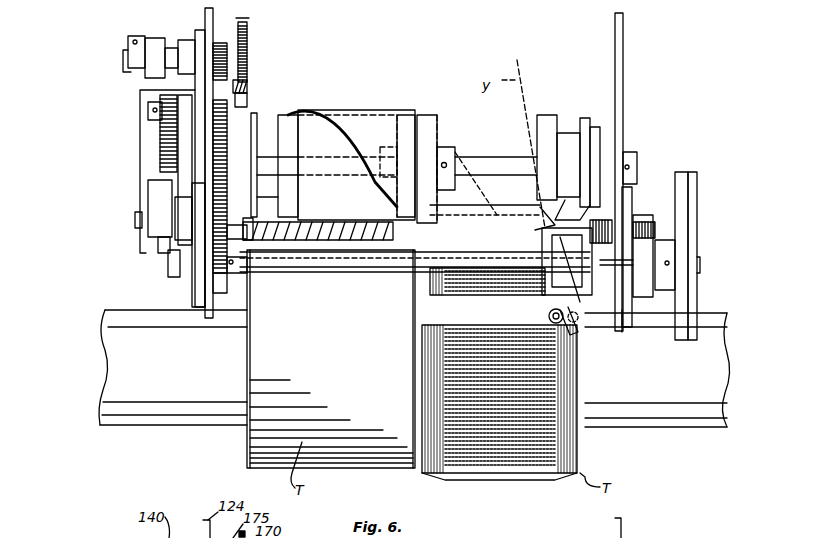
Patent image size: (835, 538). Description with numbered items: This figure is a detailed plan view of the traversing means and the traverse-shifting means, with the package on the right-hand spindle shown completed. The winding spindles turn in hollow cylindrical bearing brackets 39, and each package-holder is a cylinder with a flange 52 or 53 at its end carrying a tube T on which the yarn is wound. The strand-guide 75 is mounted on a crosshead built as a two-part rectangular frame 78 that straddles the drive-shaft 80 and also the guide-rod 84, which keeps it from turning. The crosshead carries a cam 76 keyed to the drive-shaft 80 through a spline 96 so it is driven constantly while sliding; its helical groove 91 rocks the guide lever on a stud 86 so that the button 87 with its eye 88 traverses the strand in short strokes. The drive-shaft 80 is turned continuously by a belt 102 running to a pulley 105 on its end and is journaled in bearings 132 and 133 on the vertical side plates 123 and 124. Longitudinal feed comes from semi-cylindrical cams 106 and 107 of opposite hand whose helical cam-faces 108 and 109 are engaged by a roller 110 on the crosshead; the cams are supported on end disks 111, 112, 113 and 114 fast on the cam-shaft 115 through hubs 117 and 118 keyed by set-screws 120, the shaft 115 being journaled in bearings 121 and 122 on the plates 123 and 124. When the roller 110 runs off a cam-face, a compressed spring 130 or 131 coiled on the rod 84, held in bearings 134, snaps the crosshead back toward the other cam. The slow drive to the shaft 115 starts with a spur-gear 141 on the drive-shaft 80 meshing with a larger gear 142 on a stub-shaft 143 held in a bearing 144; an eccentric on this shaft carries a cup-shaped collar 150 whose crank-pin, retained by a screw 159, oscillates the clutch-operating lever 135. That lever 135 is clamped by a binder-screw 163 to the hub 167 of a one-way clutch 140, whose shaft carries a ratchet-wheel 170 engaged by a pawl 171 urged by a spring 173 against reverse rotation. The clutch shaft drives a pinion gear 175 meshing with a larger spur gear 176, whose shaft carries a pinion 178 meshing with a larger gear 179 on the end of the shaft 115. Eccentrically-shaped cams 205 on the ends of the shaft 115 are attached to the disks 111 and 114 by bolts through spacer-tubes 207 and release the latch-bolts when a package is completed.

The bearing bracket 39 is at (120, 360).
The flange 52 is at (585, 443).
The flange 53 is at (250, 453).
The strand-guide 75 is at (545, 325).
The cam 76 is at (640, 215).
The two-part rectangular frame 78 is at (540, 207).
The drive-shaft 80 is at (405, 272).
The guide-rod 84 is at (340, 224).
The stud 86 is at (585, 290).
The button 87 is at (556, 313).
The eye 88 is at (556, 320).
The helical groove 91 is at (560, 243).
The spline 96 is at (355, 268).
The belt 102 is at (690, 180).
The pulley 105 is at (693, 240).
The semi-cylindrical cam 106 is at (478, 210).
The semi-cylindrical cam 107 is at (368, 172).
The helical cam-face 108 is at (483, 205).
The helical cam-face 109 is at (380, 112).
The roller 110 is at (571, 200).
The end disk 111 is at (565, 120).
The end disk 112 is at (440, 120).
The end disk 113 is at (400, 212).
The end disk 114 is at (293, 216).
The drive-shaft 115 is at (500, 168).
The hub 117 is at (450, 165).
The hub 118 is at (398, 150).
The set-screws 120 is at (447, 160).
The bearing 121 is at (597, 135).
The bearing 122 is at (229, 143).
The vertical side plate 123 is at (622, 80).
The vertical side plate 124 is at (205, 18).
The spring 130 is at (632, 200).
The spring 131 is at (303, 222).
The bearing 132 is at (628, 318).
The bearing 133 is at (180, 287).
The bearings 134 is at (163, 247).
The clutch-operating lever 135 is at (190, 163).
The one-way clutch 140 is at (153, 35).
The spur-gear 141 is at (215, 280).
The gear 142 is at (227, 266).
The stub-shaft 143 is at (248, 240).
The bearing 144 is at (195, 95).
The cup-shaped collar 150 is at (152, 237).
The screw 159 is at (135, 228).
The binder-screw 163 is at (128, 42).
The hub 167 is at (128, 62).
The ratchet-wheel 170 is at (248, 38).
The pawl 171 is at (245, 82).
The spring 173 is at (247, 97).
The pinion gear 175 is at (222, 43).
The spur gear 176 is at (230, 120).
The pinion 178 is at (158, 100).
The gear 179 is at (163, 137).
The eccentrically-shaped cam 205 is at (250, 160).
The spacer-tubes 207 is at (262, 140).